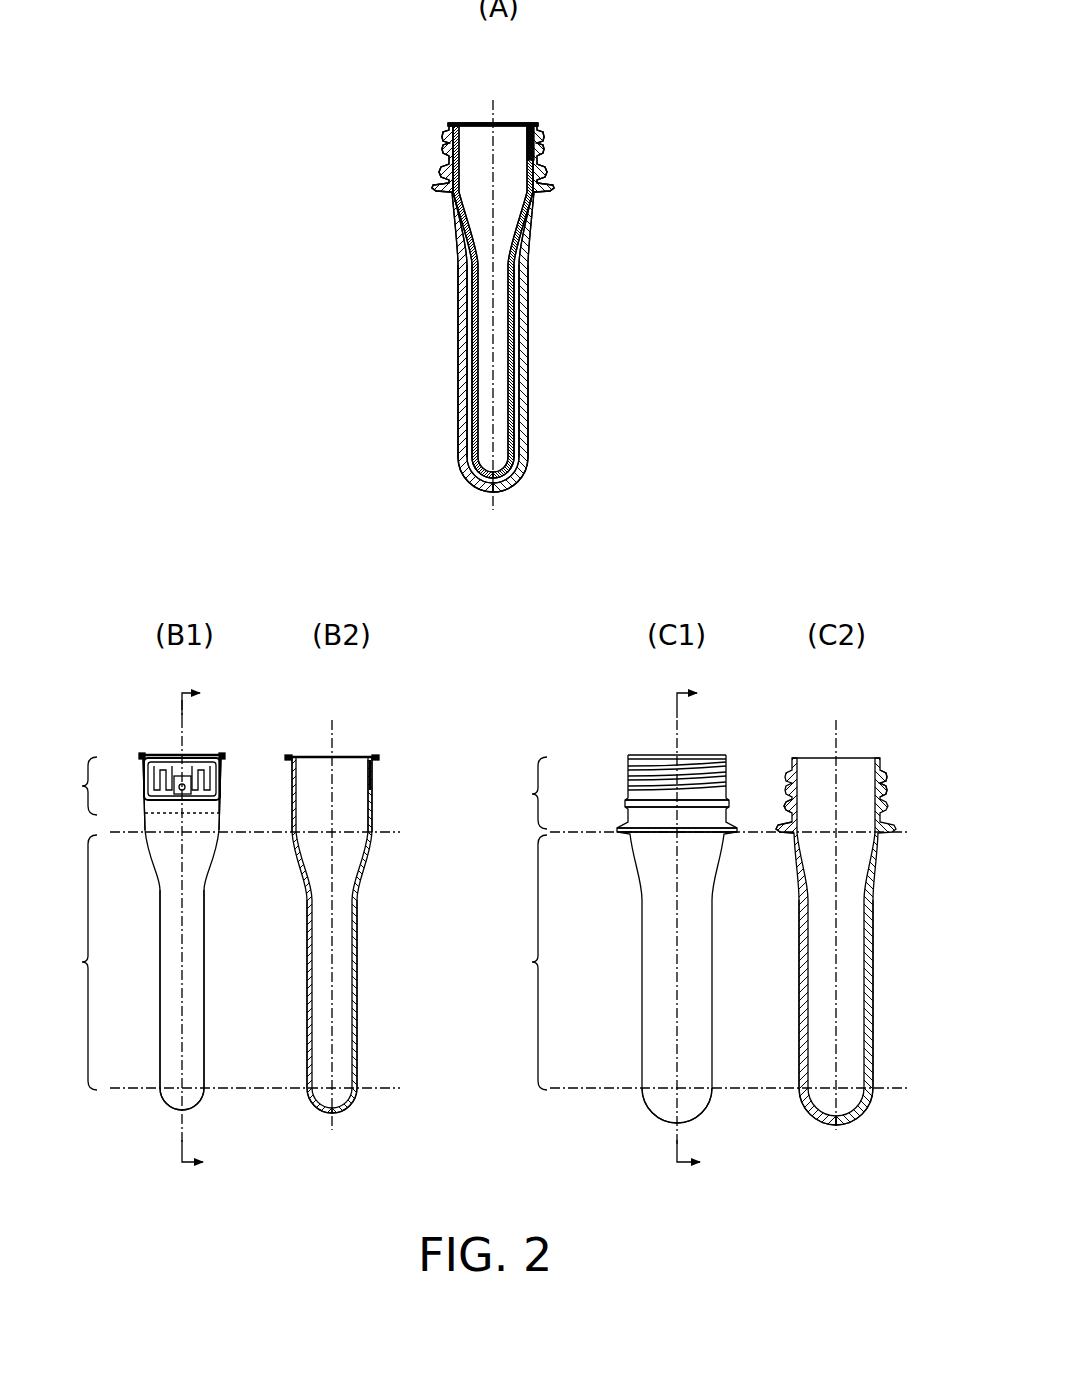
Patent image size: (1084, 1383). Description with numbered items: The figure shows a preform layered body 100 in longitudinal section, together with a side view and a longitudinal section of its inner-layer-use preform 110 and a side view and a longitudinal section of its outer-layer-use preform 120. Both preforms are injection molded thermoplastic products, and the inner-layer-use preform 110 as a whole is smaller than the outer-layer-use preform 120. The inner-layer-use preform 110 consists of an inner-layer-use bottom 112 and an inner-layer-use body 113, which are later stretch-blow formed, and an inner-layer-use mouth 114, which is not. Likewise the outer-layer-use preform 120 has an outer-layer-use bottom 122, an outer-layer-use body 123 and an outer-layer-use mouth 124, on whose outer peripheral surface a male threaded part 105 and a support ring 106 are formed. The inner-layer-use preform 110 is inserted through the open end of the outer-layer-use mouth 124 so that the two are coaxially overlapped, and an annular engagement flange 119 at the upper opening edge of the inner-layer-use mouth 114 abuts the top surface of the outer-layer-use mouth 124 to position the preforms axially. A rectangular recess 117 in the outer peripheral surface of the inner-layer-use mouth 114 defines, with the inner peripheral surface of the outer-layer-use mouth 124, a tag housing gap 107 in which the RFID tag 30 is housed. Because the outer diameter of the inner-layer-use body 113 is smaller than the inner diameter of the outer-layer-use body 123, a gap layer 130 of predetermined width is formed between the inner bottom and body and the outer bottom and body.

The preform layered body 100 is at (368, 188).
The inner-layer-use preform 110 is at (515, 374).
The outer-layer-use preform 120 is at (531, 300).
The gap layer 130 is at (521, 341).
The RFID tag 30 is at (541, 151).
The male threaded part 105 is at (441, 172).
The support ring 106 is at (433, 188).
The tag housing gap 107 is at (546, 183).
The inner-layer-use bottom 112 is at (473, 484).
The inner-layer-use body 113 is at (471, 330).
The inner-layer-use mouth 114 is at (456, 152).
The recess 117 is at (223, 785).
The engagement flange 119 is at (540, 123).
The outer-layer-use bottom 122 is at (463, 474).
The outer-layer-use body 123 is at (458, 306).
The outer-layer-use mouth 124 is at (443, 150).